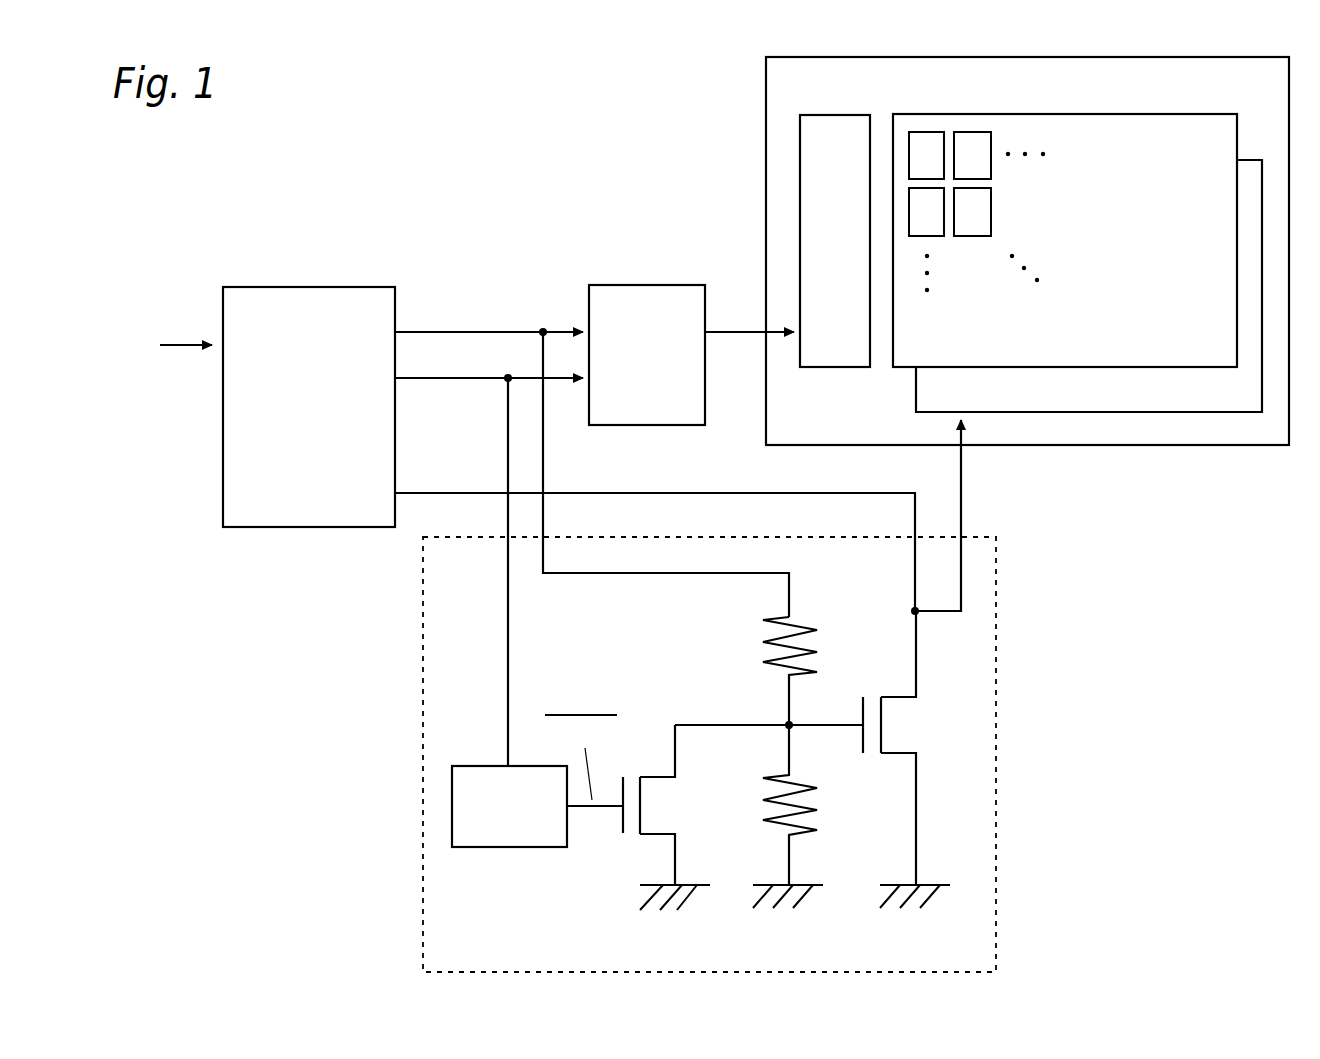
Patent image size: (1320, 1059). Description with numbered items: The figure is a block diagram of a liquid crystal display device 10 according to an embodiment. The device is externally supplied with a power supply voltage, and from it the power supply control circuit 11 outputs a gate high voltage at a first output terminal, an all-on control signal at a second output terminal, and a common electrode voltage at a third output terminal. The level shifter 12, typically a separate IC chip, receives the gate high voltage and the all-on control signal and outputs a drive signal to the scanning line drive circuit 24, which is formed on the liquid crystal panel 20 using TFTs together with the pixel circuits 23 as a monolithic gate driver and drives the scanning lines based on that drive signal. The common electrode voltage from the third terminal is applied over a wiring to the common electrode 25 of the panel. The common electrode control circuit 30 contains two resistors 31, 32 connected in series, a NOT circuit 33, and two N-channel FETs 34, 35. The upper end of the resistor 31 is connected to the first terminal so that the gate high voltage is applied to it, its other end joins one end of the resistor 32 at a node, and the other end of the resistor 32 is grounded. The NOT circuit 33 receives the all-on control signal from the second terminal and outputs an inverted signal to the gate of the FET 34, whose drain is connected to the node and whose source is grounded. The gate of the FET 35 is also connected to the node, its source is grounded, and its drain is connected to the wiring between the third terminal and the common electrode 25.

The liquid crystal display device 10 is at (463, 160).
The power supply control circuit 11 is at (309, 285).
The level shifter 12 is at (648, 283).
The liquid crystal panel 20 is at (766, 197).
The pixel circuits 23 is at (991, 213).
The scanning line drive circuit 24 is at (835, 113).
The common electrode 25 is at (914, 393).
The common electrode control circuit 30 is at (422, 755).
The resistor 31 is at (763, 645).
The resistor 32 is at (763, 805).
The NOT circuit 33 is at (473, 763).
The FET 34 is at (650, 775).
The FET 35 is at (893, 755).